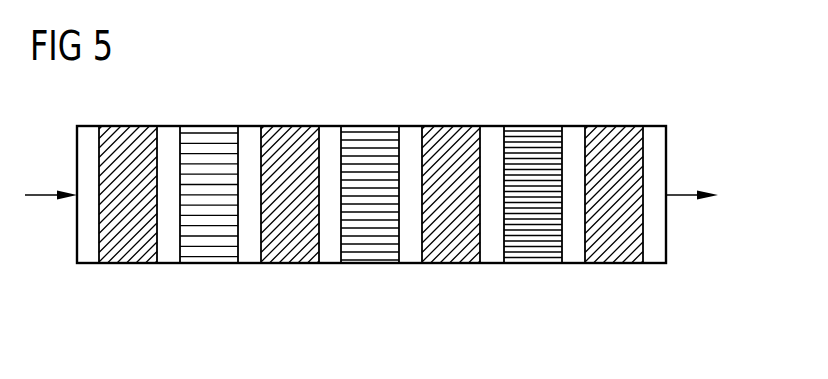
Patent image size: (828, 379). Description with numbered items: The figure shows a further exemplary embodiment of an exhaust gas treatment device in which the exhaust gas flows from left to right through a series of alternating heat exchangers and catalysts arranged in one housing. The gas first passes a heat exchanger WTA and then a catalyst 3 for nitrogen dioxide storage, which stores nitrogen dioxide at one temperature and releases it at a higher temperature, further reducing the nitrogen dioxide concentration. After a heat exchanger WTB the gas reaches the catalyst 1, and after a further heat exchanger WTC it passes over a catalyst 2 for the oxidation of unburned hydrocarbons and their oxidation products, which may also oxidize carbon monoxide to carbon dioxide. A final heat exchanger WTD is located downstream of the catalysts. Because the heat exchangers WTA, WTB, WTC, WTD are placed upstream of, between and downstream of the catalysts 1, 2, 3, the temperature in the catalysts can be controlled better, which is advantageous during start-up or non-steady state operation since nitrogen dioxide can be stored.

The heat exchanger WTA is at (128, 176).
The catalyst for NO2 storage 3 is at (209, 176).
The heat exchanger WTB is at (290, 176).
The catalyst 1 is at (370, 176).
The heat exchanger WTC is at (451, 176).
The catalyst for the oxidation of UHCs 2 is at (533, 176).
The heat exchanger WTD is at (614, 176).